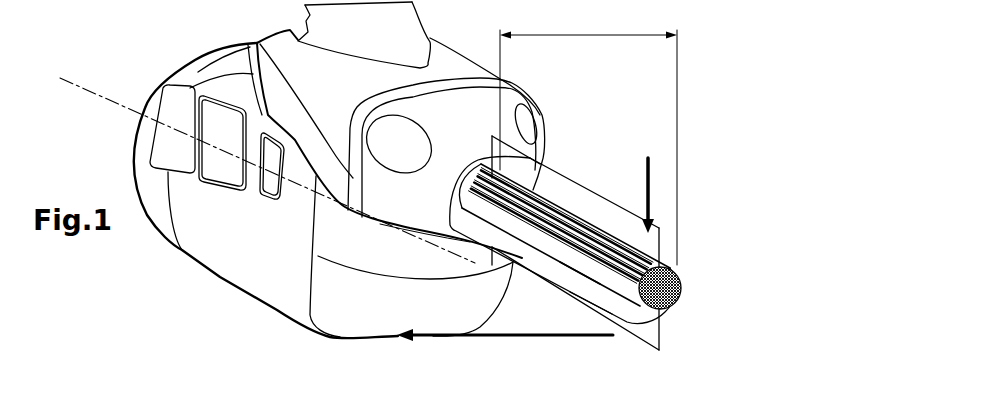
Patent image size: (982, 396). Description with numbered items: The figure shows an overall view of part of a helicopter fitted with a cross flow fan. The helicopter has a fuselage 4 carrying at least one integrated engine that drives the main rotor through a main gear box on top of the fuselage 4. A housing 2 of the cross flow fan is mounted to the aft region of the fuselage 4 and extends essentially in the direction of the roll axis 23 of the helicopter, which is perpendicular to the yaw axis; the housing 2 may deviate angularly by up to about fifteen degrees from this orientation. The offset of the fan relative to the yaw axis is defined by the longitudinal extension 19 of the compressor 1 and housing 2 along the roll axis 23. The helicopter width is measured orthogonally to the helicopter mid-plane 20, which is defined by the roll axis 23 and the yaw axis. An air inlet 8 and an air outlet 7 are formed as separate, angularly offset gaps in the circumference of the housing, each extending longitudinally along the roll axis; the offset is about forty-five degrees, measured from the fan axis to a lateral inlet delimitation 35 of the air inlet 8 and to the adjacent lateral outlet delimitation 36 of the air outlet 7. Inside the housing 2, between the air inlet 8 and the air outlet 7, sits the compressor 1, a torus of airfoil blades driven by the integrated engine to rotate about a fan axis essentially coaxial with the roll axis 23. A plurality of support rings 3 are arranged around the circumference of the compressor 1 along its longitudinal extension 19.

The compressor 1 is at (690, 285).
The housing 2 is at (667, 252).
The support rings 3 is at (625, 238).
The fuselage 4 is at (257, 252).
The air outlet 7 is at (500, 337).
The air inlet 8 is at (650, 178).
The longitudinal extension 19 is at (588, 138).
The helicopter mid-plane 20 is at (548, 297).
The roll axis 23 is at (112, 101).
The lateral inlet delimitation 35 is at (577, 290).
The lateral outlet delimitation 36 is at (603, 297).